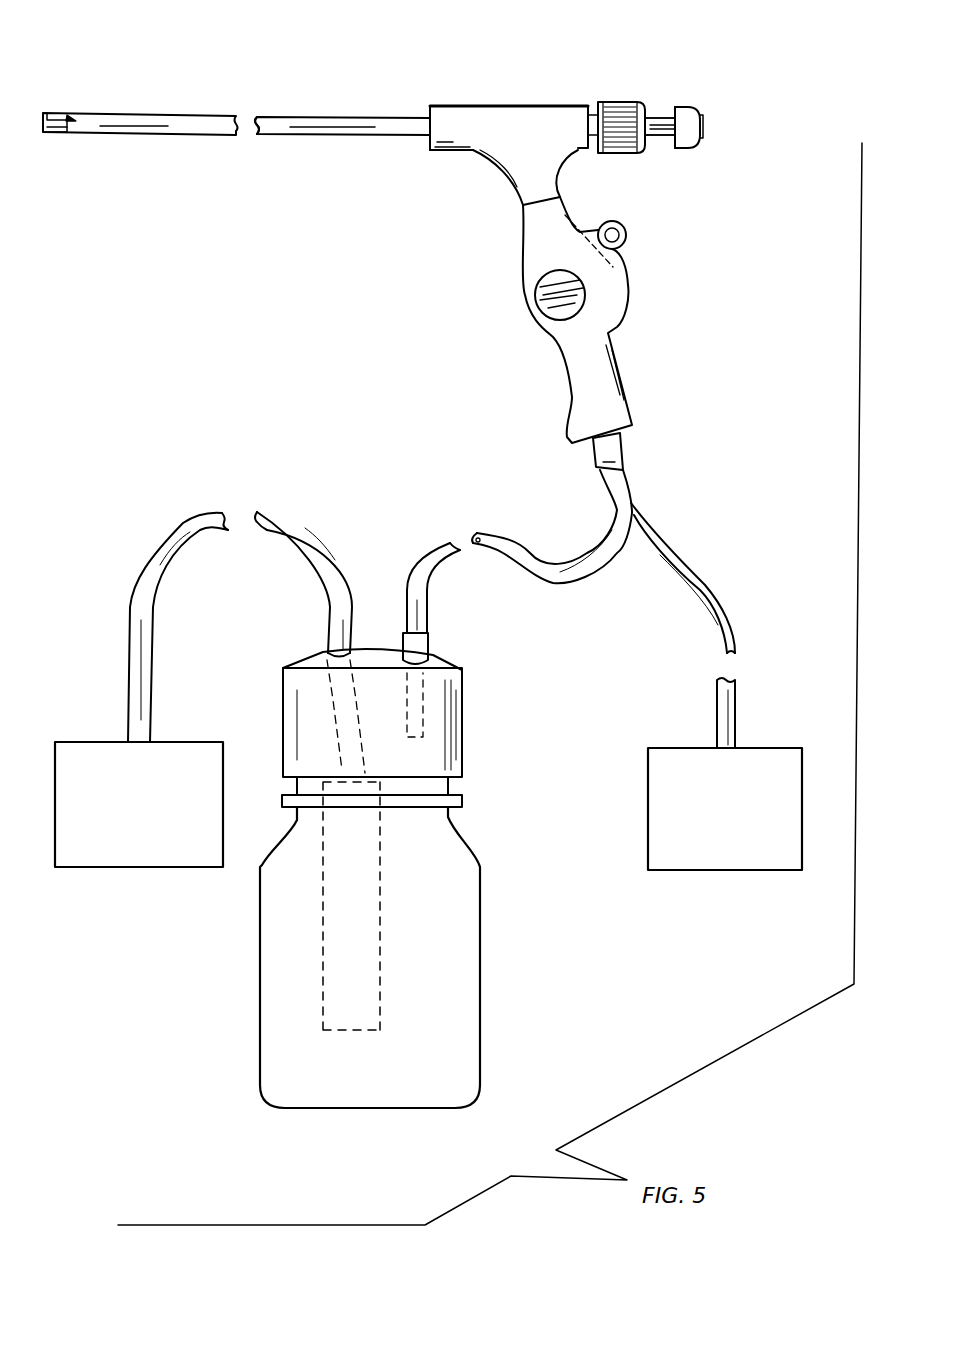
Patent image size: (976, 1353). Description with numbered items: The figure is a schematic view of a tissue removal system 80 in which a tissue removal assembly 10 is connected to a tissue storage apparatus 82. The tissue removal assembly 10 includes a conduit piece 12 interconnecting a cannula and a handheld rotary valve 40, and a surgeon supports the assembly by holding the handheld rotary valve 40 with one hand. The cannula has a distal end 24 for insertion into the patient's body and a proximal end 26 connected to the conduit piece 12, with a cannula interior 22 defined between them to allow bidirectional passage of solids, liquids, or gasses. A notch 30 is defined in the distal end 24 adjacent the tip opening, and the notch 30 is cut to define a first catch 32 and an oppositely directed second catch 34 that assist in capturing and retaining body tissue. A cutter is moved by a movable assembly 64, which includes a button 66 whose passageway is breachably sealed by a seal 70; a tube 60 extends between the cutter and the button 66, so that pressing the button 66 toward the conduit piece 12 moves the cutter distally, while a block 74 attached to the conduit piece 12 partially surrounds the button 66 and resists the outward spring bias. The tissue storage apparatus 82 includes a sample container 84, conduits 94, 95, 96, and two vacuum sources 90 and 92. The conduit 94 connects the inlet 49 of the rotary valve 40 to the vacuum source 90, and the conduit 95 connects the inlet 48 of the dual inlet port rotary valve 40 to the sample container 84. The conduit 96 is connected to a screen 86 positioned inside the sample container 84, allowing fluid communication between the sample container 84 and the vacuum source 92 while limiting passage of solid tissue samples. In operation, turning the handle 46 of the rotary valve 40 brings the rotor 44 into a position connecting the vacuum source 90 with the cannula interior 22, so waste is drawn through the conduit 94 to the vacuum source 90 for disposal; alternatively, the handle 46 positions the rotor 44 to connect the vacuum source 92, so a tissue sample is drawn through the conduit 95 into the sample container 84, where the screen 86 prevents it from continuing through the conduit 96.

The tissue removal assembly 10 is at (450, 95).
The conduit piece 12 is at (544, 105).
The cannula interior 22 is at (257, 134).
The distal end 24 is at (42, 101).
The proximal end 26 is at (425, 156).
The notch 30 is at (90, 96).
The first catch 32 is at (62, 115).
The second catch 34 is at (65, 127).
The handheld rotary valve 40 is at (650, 339).
The rotor 44 is at (552, 313).
The handle 46 is at (623, 238).
The inlet 48 is at (666, 442).
The inlet 49 is at (630, 442).
The tube 60 is at (257, 120).
The movable assembly 64 is at (701, 131).
The button 66 is at (690, 165).
The seal 70 is at (703, 135).
The block 74 is at (633, 101).
The tissue removal system 80 is at (752, 108).
The tissue storage apparatus 82 is at (584, 584).
The sample container 84 is at (490, 921).
The screen 86 is at (320, 950).
The vacuum source 90 is at (718, 853).
The vacuum source 92 is at (168, 852).
The conduit 94 is at (731, 647).
The conduit 95 is at (570, 577).
The conduit 96 is at (168, 540).